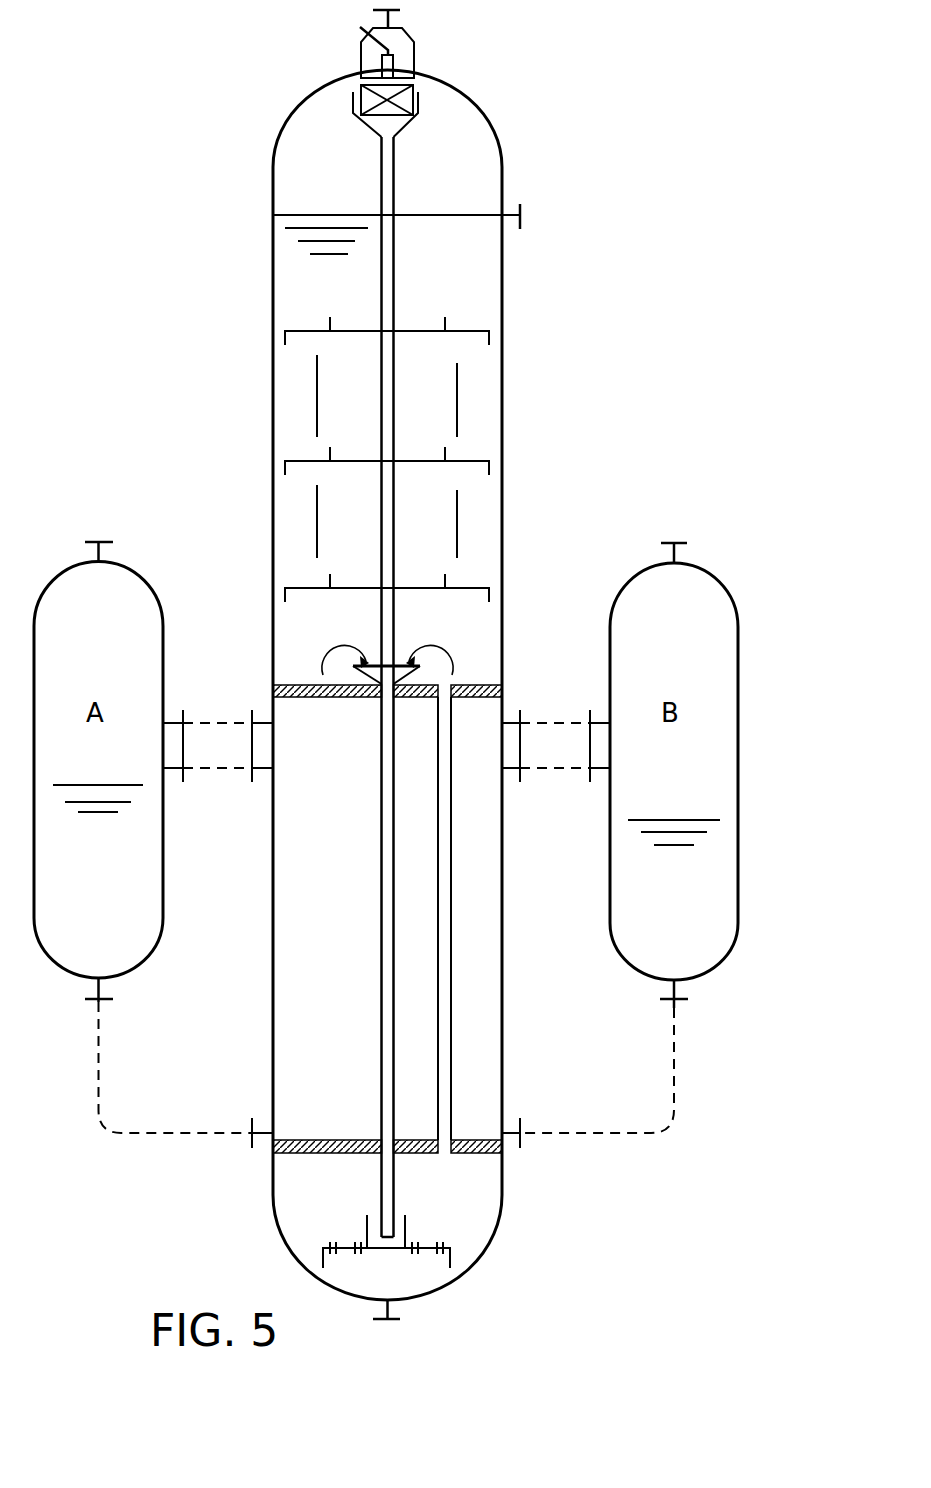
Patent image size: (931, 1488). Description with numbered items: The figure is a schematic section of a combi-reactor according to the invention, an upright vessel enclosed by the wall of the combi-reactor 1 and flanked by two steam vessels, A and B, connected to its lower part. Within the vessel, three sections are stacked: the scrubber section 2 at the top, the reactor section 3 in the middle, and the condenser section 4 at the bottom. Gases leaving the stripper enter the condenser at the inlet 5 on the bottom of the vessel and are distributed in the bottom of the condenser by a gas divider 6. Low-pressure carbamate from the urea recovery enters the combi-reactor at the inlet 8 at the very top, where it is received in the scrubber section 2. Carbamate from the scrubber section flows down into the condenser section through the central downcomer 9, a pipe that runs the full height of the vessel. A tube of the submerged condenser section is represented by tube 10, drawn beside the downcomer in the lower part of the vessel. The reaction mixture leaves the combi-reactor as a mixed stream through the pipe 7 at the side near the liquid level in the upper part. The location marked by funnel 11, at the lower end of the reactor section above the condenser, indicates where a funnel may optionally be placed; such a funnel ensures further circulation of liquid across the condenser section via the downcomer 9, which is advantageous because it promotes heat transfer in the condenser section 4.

The wall of the combi-reactor 1 is at (503, 394).
The scrubber section 2 is at (400, 108).
The reactor section 3 is at (405, 557).
The condenser section 4 is at (400, 1018).
The gas inlet 5 is at (400, 1318).
The gas divider 6 is at (447, 1246).
The pipe 7 is at (521, 215).
The carbamate inlet 8 is at (362, 13).
The downcomer 9 is at (383, 330).
The tube of the submerged condenser section 10 is at (440, 888).
The funnel 11 is at (410, 658).